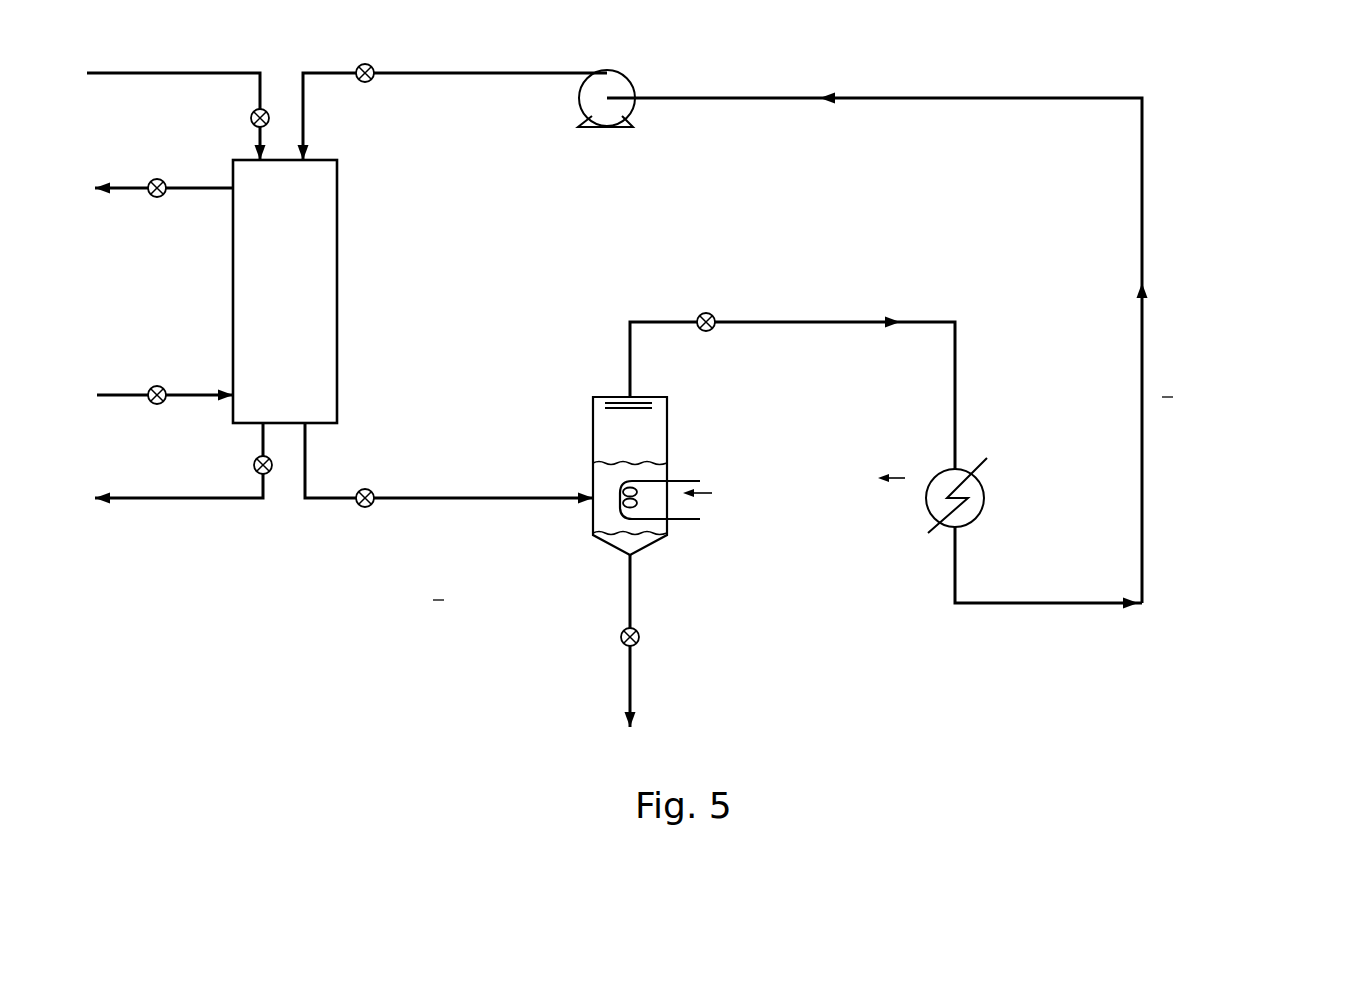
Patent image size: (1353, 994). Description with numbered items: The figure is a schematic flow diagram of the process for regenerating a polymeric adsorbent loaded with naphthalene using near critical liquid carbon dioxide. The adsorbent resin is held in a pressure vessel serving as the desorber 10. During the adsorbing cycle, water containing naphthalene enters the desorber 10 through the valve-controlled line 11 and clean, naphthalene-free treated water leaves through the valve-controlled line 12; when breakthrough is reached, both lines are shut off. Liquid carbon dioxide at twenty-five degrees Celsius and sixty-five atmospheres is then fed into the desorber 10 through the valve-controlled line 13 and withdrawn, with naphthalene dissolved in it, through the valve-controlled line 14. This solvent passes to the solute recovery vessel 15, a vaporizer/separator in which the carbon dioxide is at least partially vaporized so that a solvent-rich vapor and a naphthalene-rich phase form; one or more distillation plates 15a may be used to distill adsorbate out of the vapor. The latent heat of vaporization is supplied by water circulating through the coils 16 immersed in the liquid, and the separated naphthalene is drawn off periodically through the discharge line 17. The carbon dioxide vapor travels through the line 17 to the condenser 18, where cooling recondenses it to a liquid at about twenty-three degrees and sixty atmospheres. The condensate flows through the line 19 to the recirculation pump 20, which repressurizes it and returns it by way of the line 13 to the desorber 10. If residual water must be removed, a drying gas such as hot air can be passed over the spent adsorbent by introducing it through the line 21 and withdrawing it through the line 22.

The desorber 10 is at (322, 350).
The valve-controlled line 11 is at (263, 80).
The valve-controlled line 12 is at (243, 500).
The valve-controlled line 13 is at (403, 73).
The valve-controlled line 14 is at (330, 500).
The solute recovery vessel 15 is at (652, 454).
The distillation plates 15a is at (623, 397).
The coils 16 is at (683, 521).
The line 17 is at (924, 321).
The condenser 18 is at (940, 503).
The line 19 is at (928, 94).
The recirculation pump 20 is at (612, 88).
The line 21 is at (120, 393).
The line 22 is at (195, 191).